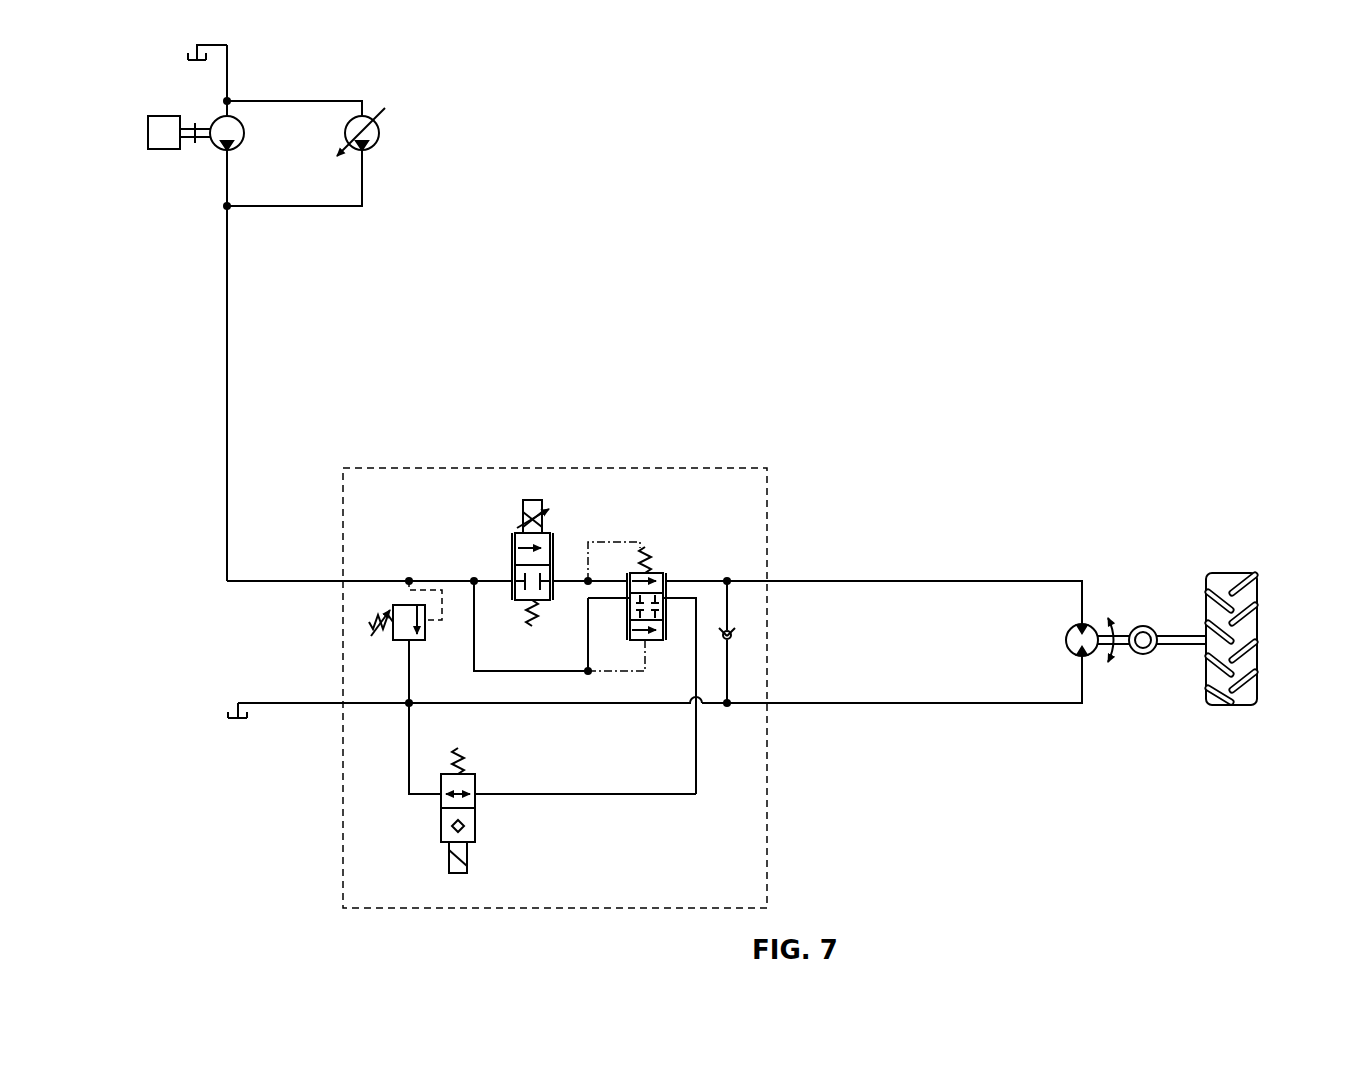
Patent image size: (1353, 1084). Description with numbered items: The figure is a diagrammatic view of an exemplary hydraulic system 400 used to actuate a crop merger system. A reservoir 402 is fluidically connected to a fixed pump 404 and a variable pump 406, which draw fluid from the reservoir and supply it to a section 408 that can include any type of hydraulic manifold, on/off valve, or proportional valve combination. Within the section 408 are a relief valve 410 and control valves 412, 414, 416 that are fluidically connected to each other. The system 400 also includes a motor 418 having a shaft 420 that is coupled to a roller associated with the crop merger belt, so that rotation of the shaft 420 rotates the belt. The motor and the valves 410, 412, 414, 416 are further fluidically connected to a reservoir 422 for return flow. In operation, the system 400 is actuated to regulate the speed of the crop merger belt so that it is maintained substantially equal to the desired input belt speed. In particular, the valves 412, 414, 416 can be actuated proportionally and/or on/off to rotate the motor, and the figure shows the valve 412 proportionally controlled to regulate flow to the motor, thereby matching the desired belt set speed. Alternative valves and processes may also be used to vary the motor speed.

The hydraulic system 400 is at (1100, 181).
The reservoir 402 is at (186, 58).
The fixed pump 404 is at (163, 150).
The variable pump 406 is at (384, 130).
The section 408 is at (615, 468).
The relief valve 410 is at (405, 605).
The control valve 412 is at (532, 500).
The control valve 414 is at (670, 578).
The control valve / motor 416 is at (478, 826).
The motor 418 is at (1143, 626).
The shaft 420 is at (1238, 573).
The reservoir 422 is at (228, 725).